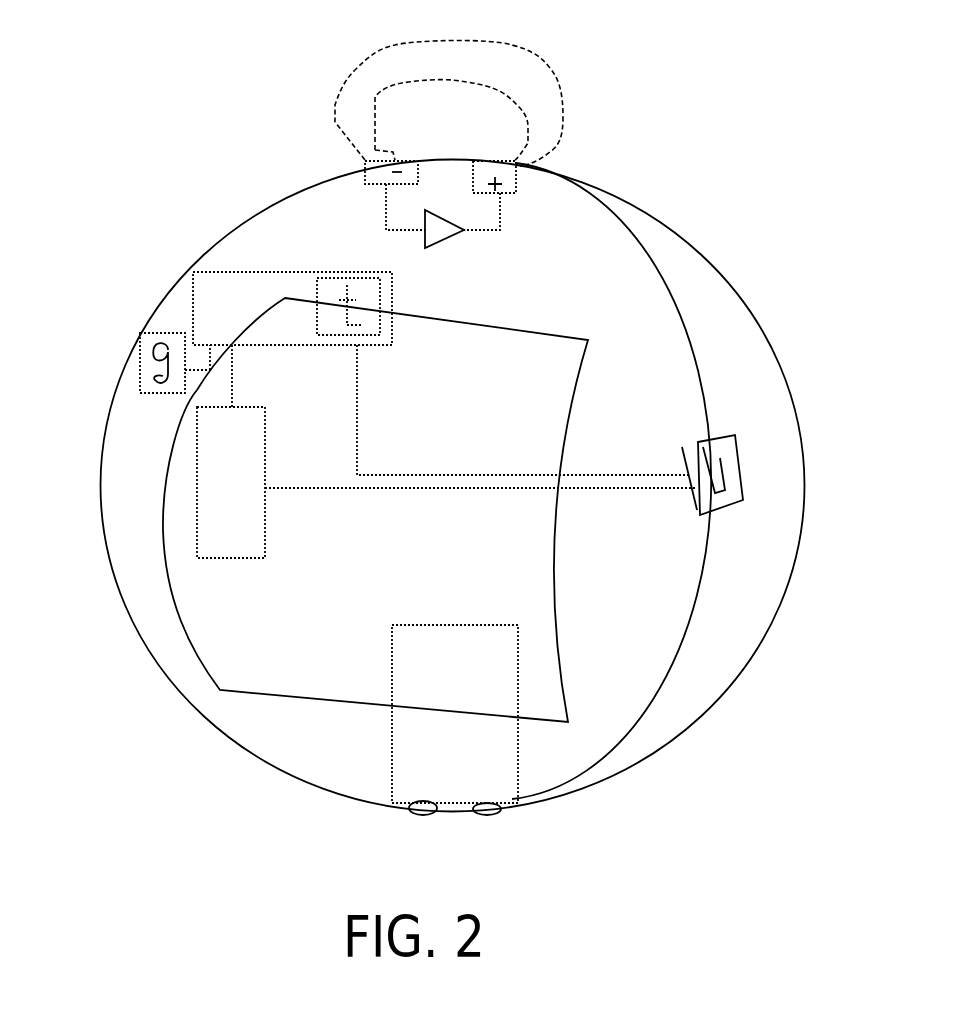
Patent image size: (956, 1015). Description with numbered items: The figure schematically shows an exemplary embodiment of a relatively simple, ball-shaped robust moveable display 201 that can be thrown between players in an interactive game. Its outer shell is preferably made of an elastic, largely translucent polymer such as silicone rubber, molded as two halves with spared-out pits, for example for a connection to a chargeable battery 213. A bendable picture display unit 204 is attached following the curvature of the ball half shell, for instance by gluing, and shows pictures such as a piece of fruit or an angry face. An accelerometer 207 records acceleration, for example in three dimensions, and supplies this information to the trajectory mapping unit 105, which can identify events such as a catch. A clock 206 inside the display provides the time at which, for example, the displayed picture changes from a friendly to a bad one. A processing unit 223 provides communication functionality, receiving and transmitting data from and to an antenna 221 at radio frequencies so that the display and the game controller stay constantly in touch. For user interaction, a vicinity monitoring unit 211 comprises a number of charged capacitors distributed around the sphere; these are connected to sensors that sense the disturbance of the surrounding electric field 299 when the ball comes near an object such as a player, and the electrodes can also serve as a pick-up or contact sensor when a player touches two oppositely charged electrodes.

The robust moveable display 201 is at (705, 688).
The flexible display 204 is at (471, 333).
The trajectory mapping unit 105 is at (255, 287).
The clock 206 is at (340, 277).
The accelerometer 207 is at (138, 378).
The vicinity monitoring unit 211 is at (368, 198).
The chargeable battery 213 is at (400, 755).
The antenna 221 is at (725, 505).
The processing unit 223 is at (251, 493).
The electric field 299 is at (537, 62).